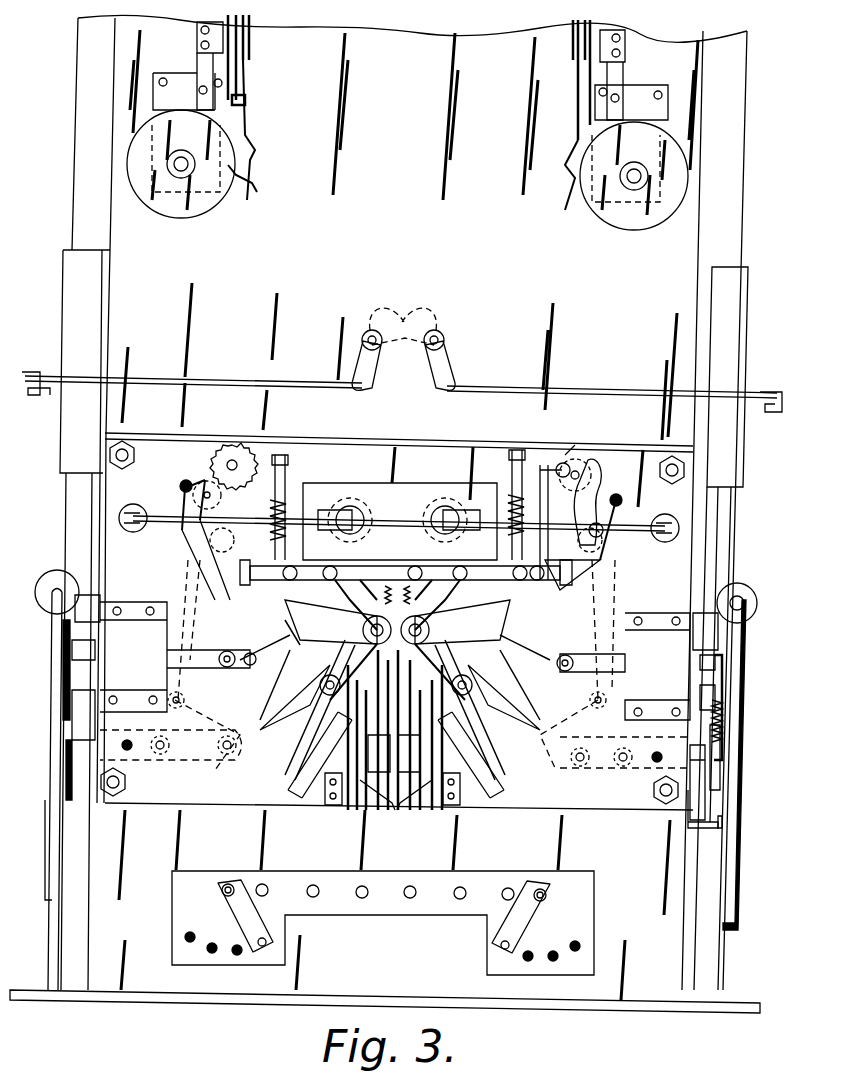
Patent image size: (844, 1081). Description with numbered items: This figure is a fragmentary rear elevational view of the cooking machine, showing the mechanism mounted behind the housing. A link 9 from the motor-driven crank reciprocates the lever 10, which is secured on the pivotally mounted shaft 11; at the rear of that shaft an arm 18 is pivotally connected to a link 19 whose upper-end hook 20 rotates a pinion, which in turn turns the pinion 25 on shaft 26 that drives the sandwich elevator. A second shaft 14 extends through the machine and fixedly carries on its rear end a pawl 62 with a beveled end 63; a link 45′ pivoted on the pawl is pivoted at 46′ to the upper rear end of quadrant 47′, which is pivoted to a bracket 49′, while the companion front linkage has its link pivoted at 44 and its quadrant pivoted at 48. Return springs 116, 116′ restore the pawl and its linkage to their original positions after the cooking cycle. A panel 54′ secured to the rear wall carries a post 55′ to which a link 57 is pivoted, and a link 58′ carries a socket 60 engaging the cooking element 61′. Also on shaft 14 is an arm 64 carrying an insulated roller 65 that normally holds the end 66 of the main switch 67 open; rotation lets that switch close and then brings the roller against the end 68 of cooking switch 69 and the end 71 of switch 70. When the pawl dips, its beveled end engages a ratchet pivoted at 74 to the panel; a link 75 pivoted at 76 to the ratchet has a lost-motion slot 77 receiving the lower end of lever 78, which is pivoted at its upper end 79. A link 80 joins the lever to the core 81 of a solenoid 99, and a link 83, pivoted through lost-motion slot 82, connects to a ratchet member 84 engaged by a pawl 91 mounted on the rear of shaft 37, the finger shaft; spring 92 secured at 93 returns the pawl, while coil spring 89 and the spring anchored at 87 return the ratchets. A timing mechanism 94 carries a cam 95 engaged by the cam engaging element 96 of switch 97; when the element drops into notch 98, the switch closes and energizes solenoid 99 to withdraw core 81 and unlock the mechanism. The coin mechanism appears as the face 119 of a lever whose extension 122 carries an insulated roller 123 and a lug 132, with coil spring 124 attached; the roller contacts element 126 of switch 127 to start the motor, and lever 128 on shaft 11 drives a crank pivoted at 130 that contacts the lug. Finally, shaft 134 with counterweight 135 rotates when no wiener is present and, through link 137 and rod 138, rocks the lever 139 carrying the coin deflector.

The link 9 is at (722, 820).
The lever 10 is at (758, 594).
The shaft 11 is at (582, 750).
The shaft 14 is at (399, 613).
The arm 18 is at (612, 728).
The link 19 is at (622, 618).
The hook 20 is at (616, 498).
The pinion 25 is at (592, 460).
The shaft 26 is at (575, 455).
The shaft 37 is at (378, 550).
The pivot 44 is at (342, 622).
The link 45′ is at (338, 562).
The pivot 46′ is at (478, 500).
The quadrant 47′ is at (470, 482).
The pivot 48 is at (509, 601).
The bracket 49′ is at (385, 482).
The panel 54′ is at (630, 460).
The post 55′ is at (666, 514).
The link 57 is at (652, 522).
The link 58′ is at (663, 540).
The socket 60 is at (489, 516).
The cooking element 61′ is at (438, 512).
The pawl 62 is at (458, 648).
The beveled end 63 is at (530, 628).
The arm 64 is at (440, 622).
The insulated roller 65 is at (262, 602).
The end 66 is at (419, 666).
The main switch 67 is at (509, 720).
The end 68 is at (439, 671).
The cooking switch 69 is at (465, 790).
The switch 70 is at (389, 777).
The end 71 is at (395, 697).
The pivot 74 is at (464, 750).
The link 75 is at (555, 710).
The pivot 76 is at (500, 684).
The lost motion slot 77 is at (561, 691).
The lever 78 is at (540, 648).
The upper end 79 is at (568, 445).
The link 80 is at (552, 660).
The core 81 is at (626, 662).
The lost motion slot 82 is at (532, 550).
The link 83 is at (472, 550).
The ratchet member 84 is at (449, 598).
The fixing point 87 is at (400, 810).
The coil spring 89 is at (612, 570).
The pawl 91 is at (428, 550).
The spring 92 is at (403, 598).
The fixing point 93 is at (403, 550).
The timing mechanism 94 is at (180, 72).
The cam 95 is at (200, 208).
The cam engaging element 96 is at (252, 145).
The switch 97 is at (250, 45).
The notch 98 is at (255, 180).
The solenoid 99 is at (650, 615).
The spring post 116 is at (292, 485).
The spring post 116′ is at (510, 485).
The face 119 is at (724, 708).
The extension 122 is at (700, 732).
The insulated roller 123 is at (718, 662).
The coil spring 124 is at (722, 732).
The element 126 is at (699, 695).
The switch 127 is at (720, 632).
The lever 128 is at (596, 768).
The pivot 130 is at (657, 762).
The lug 132 is at (722, 760).
The shaft 134 is at (378, 350).
The counterweight 135 is at (392, 306).
The link 137 is at (432, 380).
The rod 138 is at (500, 387).
The lever 139 is at (768, 408).